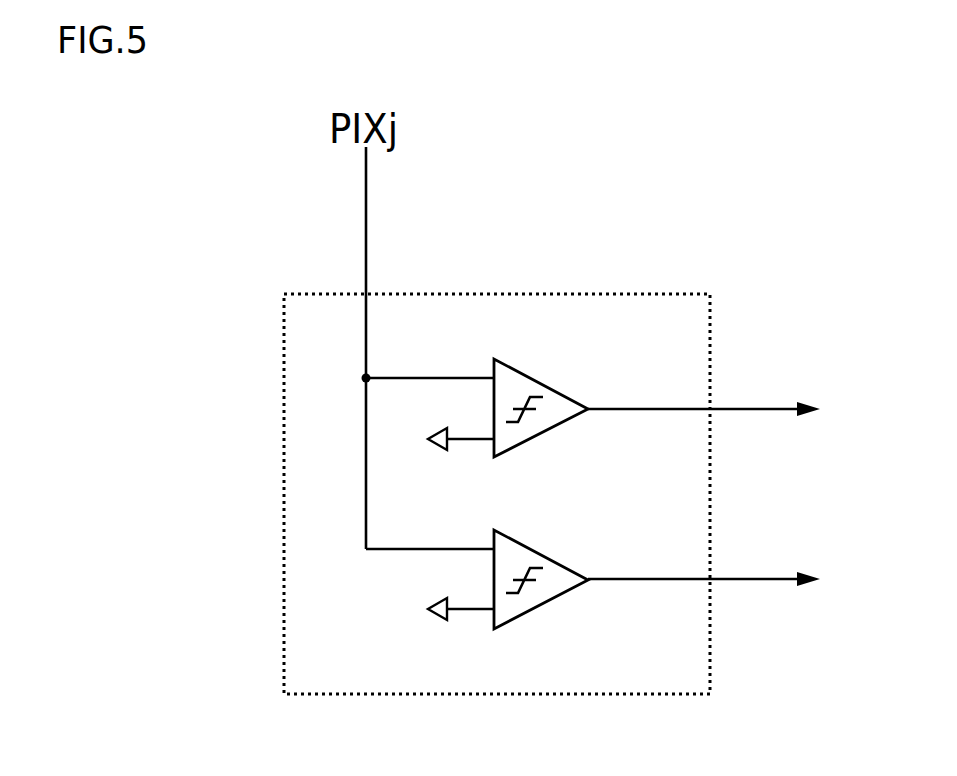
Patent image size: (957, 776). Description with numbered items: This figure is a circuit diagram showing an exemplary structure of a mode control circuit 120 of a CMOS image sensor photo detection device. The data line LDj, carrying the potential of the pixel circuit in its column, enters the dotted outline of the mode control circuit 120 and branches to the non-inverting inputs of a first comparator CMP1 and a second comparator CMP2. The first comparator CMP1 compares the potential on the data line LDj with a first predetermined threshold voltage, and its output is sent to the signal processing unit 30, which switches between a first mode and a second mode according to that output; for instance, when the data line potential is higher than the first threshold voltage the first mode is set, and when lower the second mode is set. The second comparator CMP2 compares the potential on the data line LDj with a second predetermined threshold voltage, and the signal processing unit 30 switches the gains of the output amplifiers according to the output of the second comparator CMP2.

The signal processing unit 30 is at (725, 494).
The mode control circuit 120 is at (498, 694).
The data line LDj is at (366, 220).
The first comparator CMP1 is at (542, 437).
The second comparator CMP2 is at (542, 608).